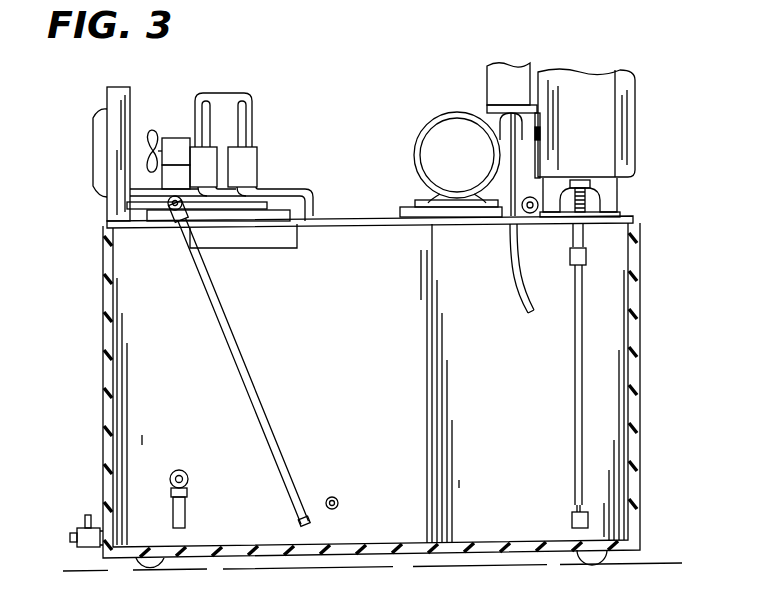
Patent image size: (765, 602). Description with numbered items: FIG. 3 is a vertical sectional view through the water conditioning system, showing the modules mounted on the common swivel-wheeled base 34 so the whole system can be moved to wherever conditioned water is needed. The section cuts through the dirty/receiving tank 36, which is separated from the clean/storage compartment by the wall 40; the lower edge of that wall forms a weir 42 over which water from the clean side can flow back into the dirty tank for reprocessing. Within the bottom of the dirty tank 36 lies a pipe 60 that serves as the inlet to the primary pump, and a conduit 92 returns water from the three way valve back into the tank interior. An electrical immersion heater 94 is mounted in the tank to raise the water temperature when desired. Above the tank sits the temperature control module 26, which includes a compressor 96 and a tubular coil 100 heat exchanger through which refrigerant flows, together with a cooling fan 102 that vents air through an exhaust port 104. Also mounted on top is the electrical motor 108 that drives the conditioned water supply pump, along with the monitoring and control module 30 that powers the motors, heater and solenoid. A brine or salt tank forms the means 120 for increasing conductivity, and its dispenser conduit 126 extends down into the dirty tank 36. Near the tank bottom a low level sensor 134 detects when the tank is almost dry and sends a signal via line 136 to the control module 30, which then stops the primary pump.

The temperature control module 26 is at (242, 136).
The monitoring and control module 30 is at (585, 90).
The swivel-wheeled base 34 is at (608, 553).
The dirty/receiving tank 36 is at (410, 373).
The wall 40 is at (362, 240).
The weir 42 is at (268, 249).
The pipe 60 is at (190, 482).
The conduit 92 is at (268, 401).
The electrical immersion heater 94 is at (338, 499).
The compressor 96 is at (232, 101).
The tubular coil 100 is at (313, 212).
The cooling fan 102 is at (175, 138).
The exhaust port 104 is at (95, 168).
The electrical motor 108 is at (482, 173).
The means for increasing conductivity 120 is at (487, 84).
The dispenser conduit 126 is at (518, 292).
The low level sensor 134 is at (572, 517).
The line 136 is at (578, 396).